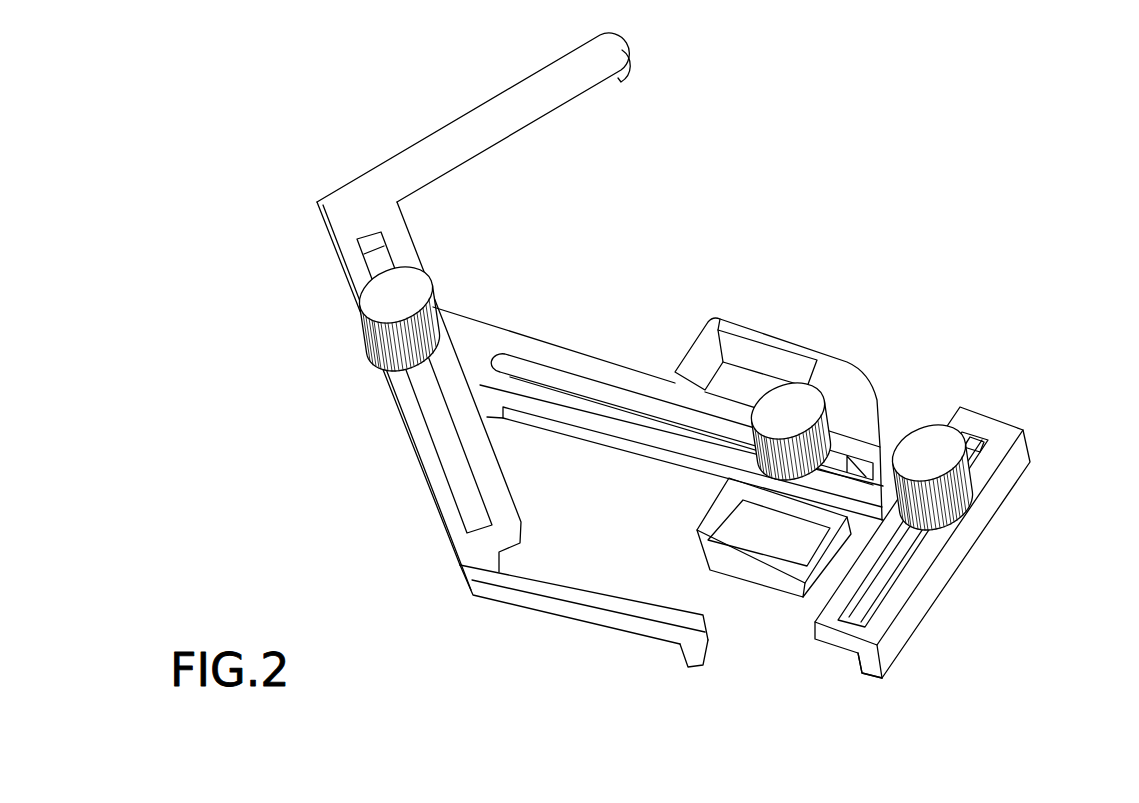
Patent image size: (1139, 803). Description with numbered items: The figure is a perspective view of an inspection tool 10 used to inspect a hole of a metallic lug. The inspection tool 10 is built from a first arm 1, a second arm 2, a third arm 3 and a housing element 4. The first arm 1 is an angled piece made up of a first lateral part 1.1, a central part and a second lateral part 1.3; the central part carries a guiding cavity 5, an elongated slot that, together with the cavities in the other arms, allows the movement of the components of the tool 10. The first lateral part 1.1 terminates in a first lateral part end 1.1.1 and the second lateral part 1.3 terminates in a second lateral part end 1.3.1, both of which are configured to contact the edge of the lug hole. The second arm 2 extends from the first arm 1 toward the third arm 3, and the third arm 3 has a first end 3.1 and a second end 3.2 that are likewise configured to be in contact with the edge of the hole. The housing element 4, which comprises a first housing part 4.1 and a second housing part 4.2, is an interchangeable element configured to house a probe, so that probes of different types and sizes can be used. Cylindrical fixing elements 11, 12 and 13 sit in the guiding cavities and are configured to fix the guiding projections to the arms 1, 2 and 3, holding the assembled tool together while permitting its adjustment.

The inspection tool 10 is at (885, 163).
The first arm 1 is at (302, 361).
The first lateral part 1.1 is at (525, 598).
The first lateral part end 1.1.1 is at (687, 665).
The second lateral part 1.3 is at (475, 128).
The second lateral part end 1.3.1 is at (670, 58).
The guiding cavity 5 is at (460, 485).
The fixing element 11 is at (378, 293).
The second arm 2 is at (582, 310).
The fixing element 12 is at (773, 425).
The housing element 4 is at (912, 355).
The first housing part 4.1 is at (808, 311).
The second housing part 4.2 is at (762, 630).
The third arm 3 is at (1030, 572).
The first end 3.1 is at (880, 660).
The second end 3.2 is at (988, 418).
The fixing element 13 is at (937, 458).